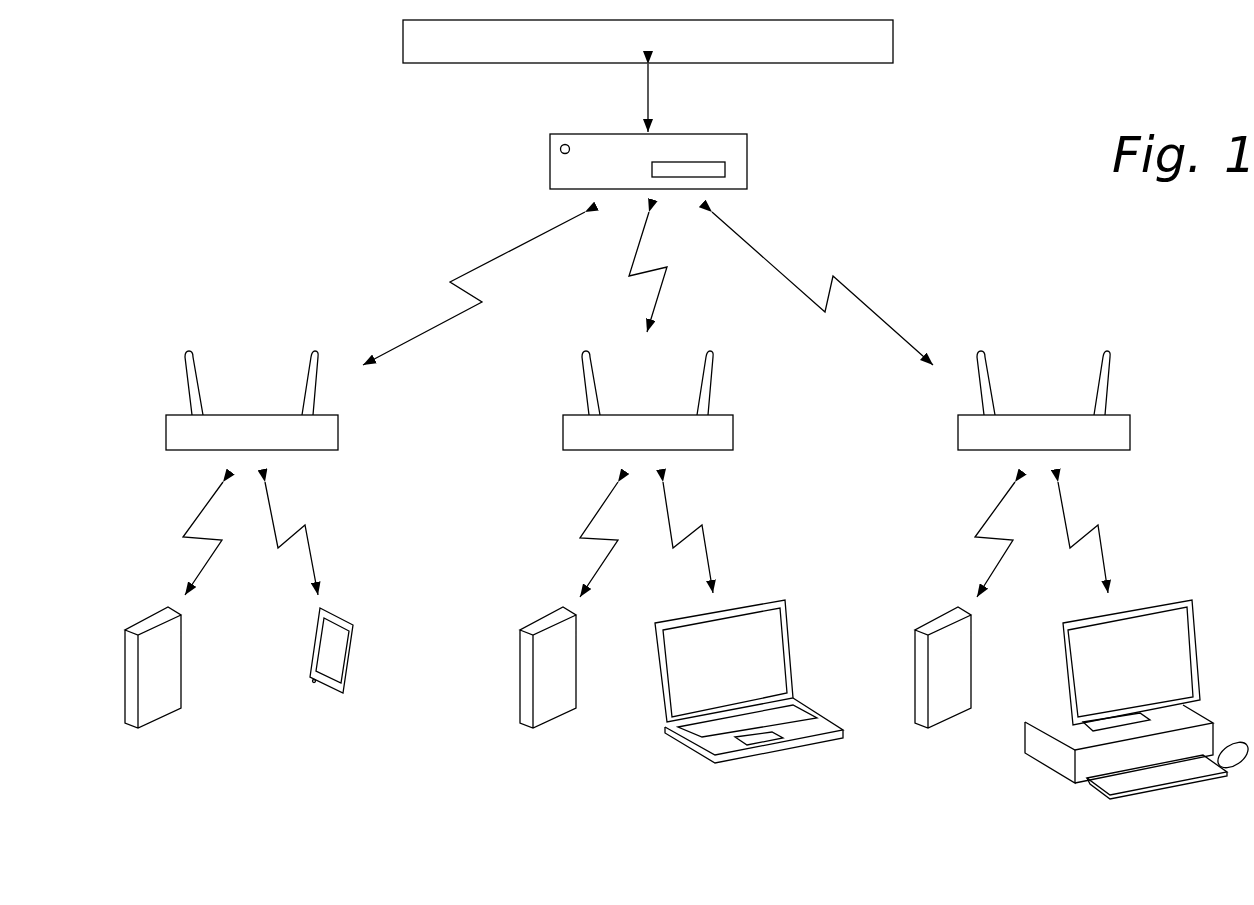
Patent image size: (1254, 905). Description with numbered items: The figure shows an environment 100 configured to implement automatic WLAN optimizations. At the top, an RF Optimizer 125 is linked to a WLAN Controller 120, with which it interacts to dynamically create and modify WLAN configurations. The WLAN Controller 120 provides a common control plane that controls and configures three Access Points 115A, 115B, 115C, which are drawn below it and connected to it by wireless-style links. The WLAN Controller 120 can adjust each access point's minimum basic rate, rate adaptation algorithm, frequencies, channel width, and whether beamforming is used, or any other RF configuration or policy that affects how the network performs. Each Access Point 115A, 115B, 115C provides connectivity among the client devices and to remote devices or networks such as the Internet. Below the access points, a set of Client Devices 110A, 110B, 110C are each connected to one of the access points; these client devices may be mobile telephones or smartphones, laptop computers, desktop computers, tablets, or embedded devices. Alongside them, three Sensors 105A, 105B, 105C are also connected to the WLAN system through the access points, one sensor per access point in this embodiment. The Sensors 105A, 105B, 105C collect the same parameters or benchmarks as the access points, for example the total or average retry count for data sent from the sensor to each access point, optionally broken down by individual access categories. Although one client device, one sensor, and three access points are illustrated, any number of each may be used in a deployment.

The environment 100 is at (204, 66).
The RF optimizer 125 is at (893, 33).
The WLAN controller 120 is at (747, 145).
The access point 115A is at (338, 428).
The access point 115B is at (733, 428).
The access point 115C is at (1130, 428).
The sensor 105A is at (133, 728).
The sensor 105B is at (528, 728).
The sensor 105C is at (923, 728).
The client device 110A is at (316, 685).
The client device 110B is at (690, 750).
The client device 110C is at (1050, 767).